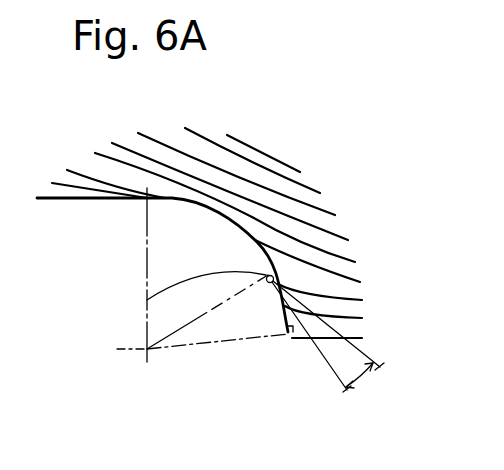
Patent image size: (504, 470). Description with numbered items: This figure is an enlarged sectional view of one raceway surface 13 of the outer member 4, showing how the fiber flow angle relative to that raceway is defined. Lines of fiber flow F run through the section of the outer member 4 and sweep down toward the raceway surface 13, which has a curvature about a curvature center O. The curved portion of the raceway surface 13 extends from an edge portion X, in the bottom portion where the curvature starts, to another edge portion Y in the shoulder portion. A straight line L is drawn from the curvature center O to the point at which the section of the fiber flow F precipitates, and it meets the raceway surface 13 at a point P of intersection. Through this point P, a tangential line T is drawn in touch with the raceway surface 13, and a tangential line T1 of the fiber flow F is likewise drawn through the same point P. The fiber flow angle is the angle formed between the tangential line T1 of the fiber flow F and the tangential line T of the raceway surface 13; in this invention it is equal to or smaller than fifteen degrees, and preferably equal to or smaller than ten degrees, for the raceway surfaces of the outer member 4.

The outer member 4 is at (268, 163).
The raceway surface 13 is at (218, 214).
The fiber flow F is at (335, 298).
The edge portion X is at (134, 275).
The edge portion Y is at (228, 349).
The curvature center O is at (132, 366).
The point of intersection P is at (147, 300).
The straight line L is at (206, 308).
The tangential line T is at (330, 370).
The tangential line of the fiber flow T1 is at (365, 350).